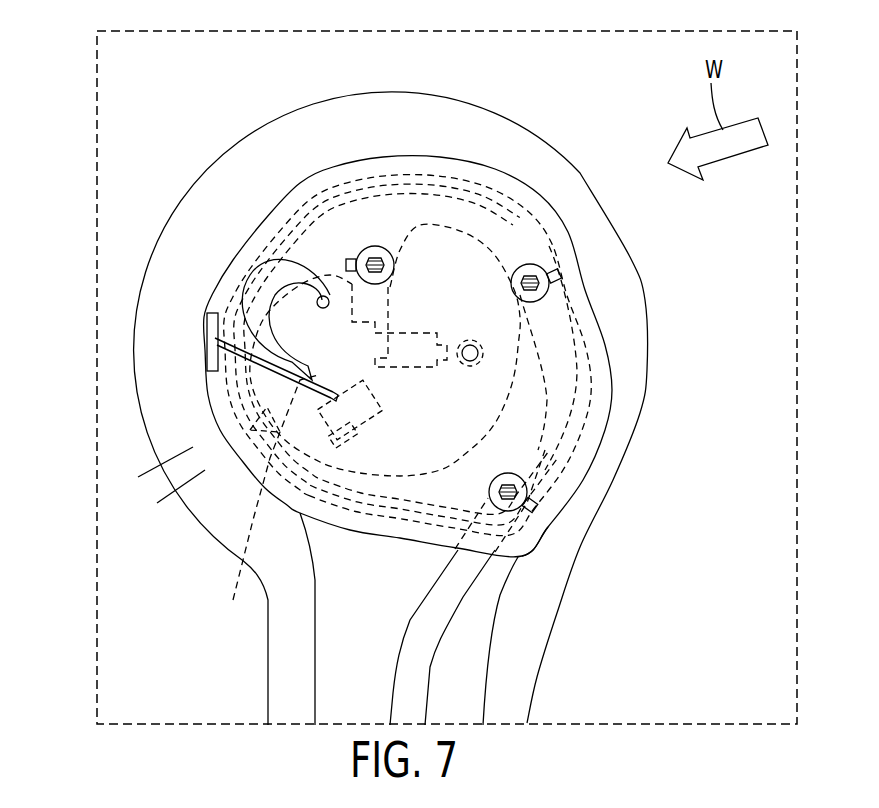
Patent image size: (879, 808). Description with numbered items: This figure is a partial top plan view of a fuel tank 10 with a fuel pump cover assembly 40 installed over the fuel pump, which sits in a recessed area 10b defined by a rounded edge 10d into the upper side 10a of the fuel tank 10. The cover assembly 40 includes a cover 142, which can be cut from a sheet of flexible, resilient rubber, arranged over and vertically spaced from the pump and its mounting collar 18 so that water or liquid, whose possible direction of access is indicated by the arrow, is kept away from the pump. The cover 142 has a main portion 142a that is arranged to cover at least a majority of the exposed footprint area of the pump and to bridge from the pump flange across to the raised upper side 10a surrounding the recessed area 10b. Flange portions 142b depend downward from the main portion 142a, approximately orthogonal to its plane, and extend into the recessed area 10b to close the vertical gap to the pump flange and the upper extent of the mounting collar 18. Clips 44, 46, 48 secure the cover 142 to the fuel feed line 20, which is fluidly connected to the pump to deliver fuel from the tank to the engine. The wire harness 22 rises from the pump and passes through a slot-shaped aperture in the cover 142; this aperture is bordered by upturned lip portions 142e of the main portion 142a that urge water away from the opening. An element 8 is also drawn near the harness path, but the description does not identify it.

The fuel tank 10 is at (233, 68).
The upper side of the fuel tank 10a is at (226, 675).
The recessed area 10b is at (215, 535).
The edge 10d is at (267, 233).
The mounting collar 18 is at (233, 600).
The fuel feed line 20 is at (402, 697).
The wire harness 22 is at (262, 278).
The fuel pump cover assembly 40 is at (578, 665).
The clip 44 is at (350, 249).
The clip 46 is at (562, 258).
The clip 48 is at (522, 471).
The internal component 8 is at (337, 347).
The cover 142 is at (584, 309).
The main portion 142a is at (578, 348).
The flange portion 142b is at (518, 558).
The upturned lip portions 142e is at (210, 375).